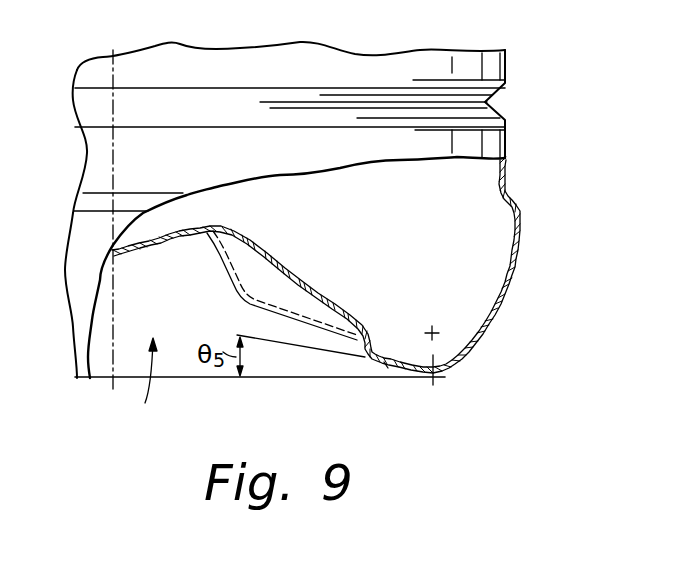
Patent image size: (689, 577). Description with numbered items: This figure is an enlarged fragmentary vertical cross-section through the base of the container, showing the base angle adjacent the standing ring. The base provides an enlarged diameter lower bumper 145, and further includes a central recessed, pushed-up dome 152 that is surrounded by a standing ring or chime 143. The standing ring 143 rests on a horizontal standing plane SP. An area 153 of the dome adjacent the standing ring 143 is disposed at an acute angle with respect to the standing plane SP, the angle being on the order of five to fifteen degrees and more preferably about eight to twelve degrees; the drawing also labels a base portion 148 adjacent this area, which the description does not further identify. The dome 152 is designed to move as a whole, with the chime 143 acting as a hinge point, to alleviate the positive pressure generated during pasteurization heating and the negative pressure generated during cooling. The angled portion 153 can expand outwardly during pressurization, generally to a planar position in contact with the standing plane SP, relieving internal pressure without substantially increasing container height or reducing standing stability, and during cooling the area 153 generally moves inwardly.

The enlarged diameter lower bumper 145 is at (517, 220).
The bead seat portion 148 is at (240, 278).
The central recessed dome 152 is at (147, 388).
The angled area of the dome 153 is at (388, 365).
The standing ring or chime 143 is at (433, 373).
The horizontal standing plane SP is at (185, 378).